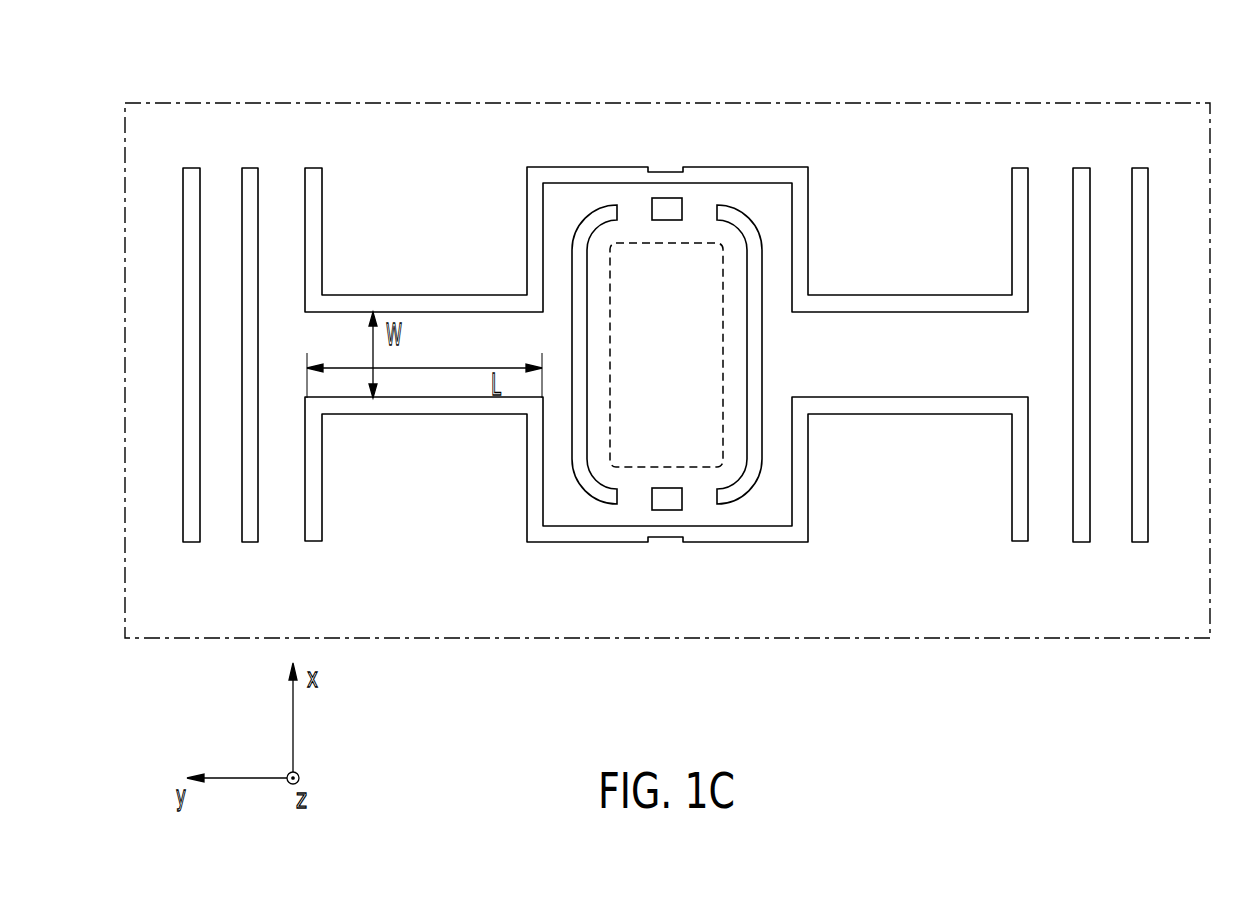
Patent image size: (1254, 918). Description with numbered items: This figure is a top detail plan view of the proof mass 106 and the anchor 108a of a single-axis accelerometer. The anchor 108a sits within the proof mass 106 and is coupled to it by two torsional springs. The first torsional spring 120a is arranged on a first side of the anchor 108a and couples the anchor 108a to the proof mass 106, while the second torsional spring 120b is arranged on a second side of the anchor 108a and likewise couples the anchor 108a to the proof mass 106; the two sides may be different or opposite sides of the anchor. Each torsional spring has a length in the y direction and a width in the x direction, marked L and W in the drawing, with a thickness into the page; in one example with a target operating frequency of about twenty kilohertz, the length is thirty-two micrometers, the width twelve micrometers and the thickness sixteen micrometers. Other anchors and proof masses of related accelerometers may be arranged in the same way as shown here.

The proof mass 106 is at (963, 100).
The anchor 108a is at (690, 263).
The first torsional spring 120a is at (432, 330).
The second torsional spring 120b is at (912, 372).